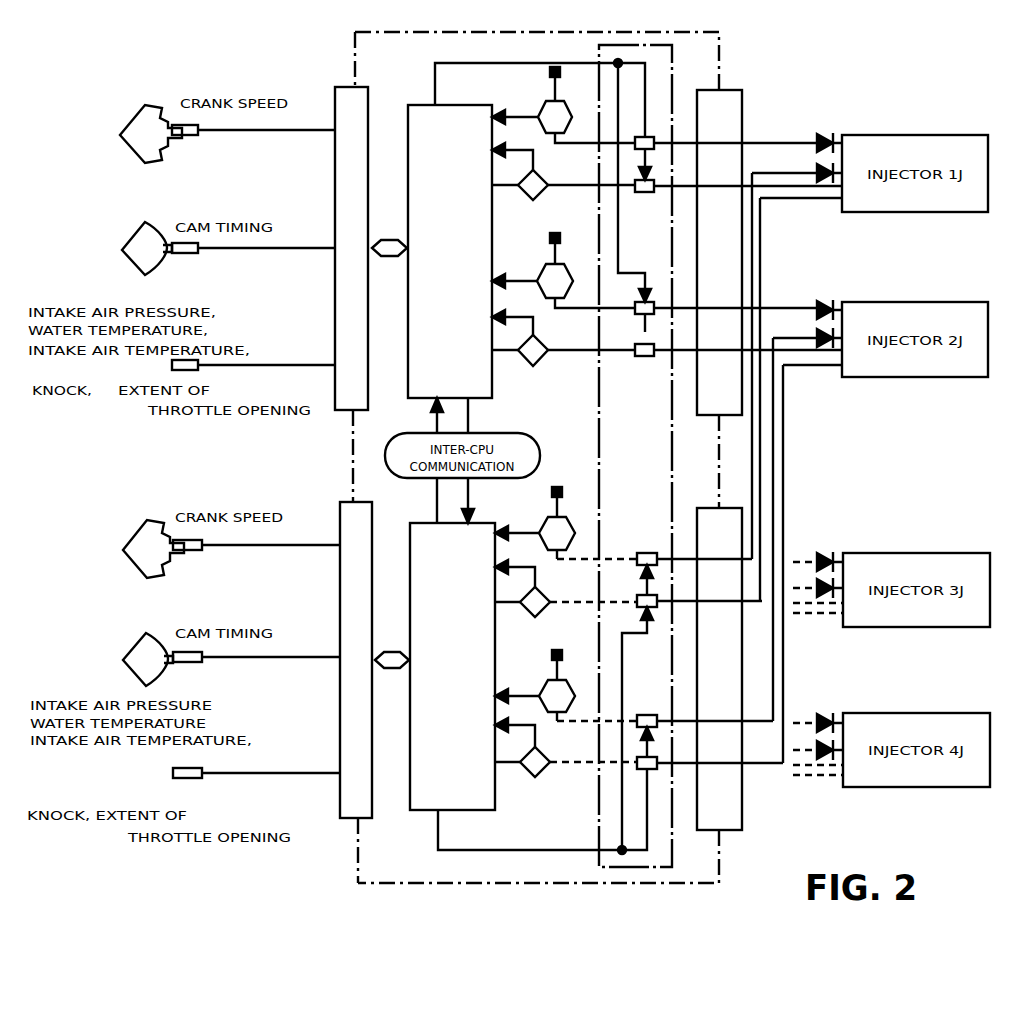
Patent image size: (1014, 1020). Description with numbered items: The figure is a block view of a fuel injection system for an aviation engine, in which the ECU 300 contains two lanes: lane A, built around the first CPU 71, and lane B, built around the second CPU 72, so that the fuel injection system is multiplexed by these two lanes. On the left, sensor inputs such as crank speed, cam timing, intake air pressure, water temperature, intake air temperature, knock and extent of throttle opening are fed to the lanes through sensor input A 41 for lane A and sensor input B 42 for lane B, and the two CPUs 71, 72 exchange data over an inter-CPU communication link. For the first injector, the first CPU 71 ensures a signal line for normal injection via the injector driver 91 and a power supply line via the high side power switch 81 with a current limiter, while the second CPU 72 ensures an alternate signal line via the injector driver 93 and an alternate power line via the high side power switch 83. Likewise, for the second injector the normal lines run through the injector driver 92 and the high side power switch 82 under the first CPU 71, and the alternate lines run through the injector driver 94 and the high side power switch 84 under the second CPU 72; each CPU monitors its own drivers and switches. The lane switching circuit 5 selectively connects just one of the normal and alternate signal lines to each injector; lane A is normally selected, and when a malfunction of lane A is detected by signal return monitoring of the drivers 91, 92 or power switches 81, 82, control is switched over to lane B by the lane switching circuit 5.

The lane switching circuit 5 is at (641, 44).
The sensor input A 41 is at (350, 86).
The sensor input B 42 is at (351, 501).
The first CPU 71 is at (428, 104).
The second CPU 72 is at (458, 811).
The high side power switch 81 is at (546, 103).
The high side power switch 82 is at (546, 266).
The high side power switch 83 is at (545, 520).
The high side power switch 84 is at (547, 682).
The injector driver 91 is at (543, 194).
The injector driver 92 is at (543, 358).
The injector driver 93 is at (545, 610).
The injector driver 94 is at (545, 771).
The ECU 300 is at (618, 884).